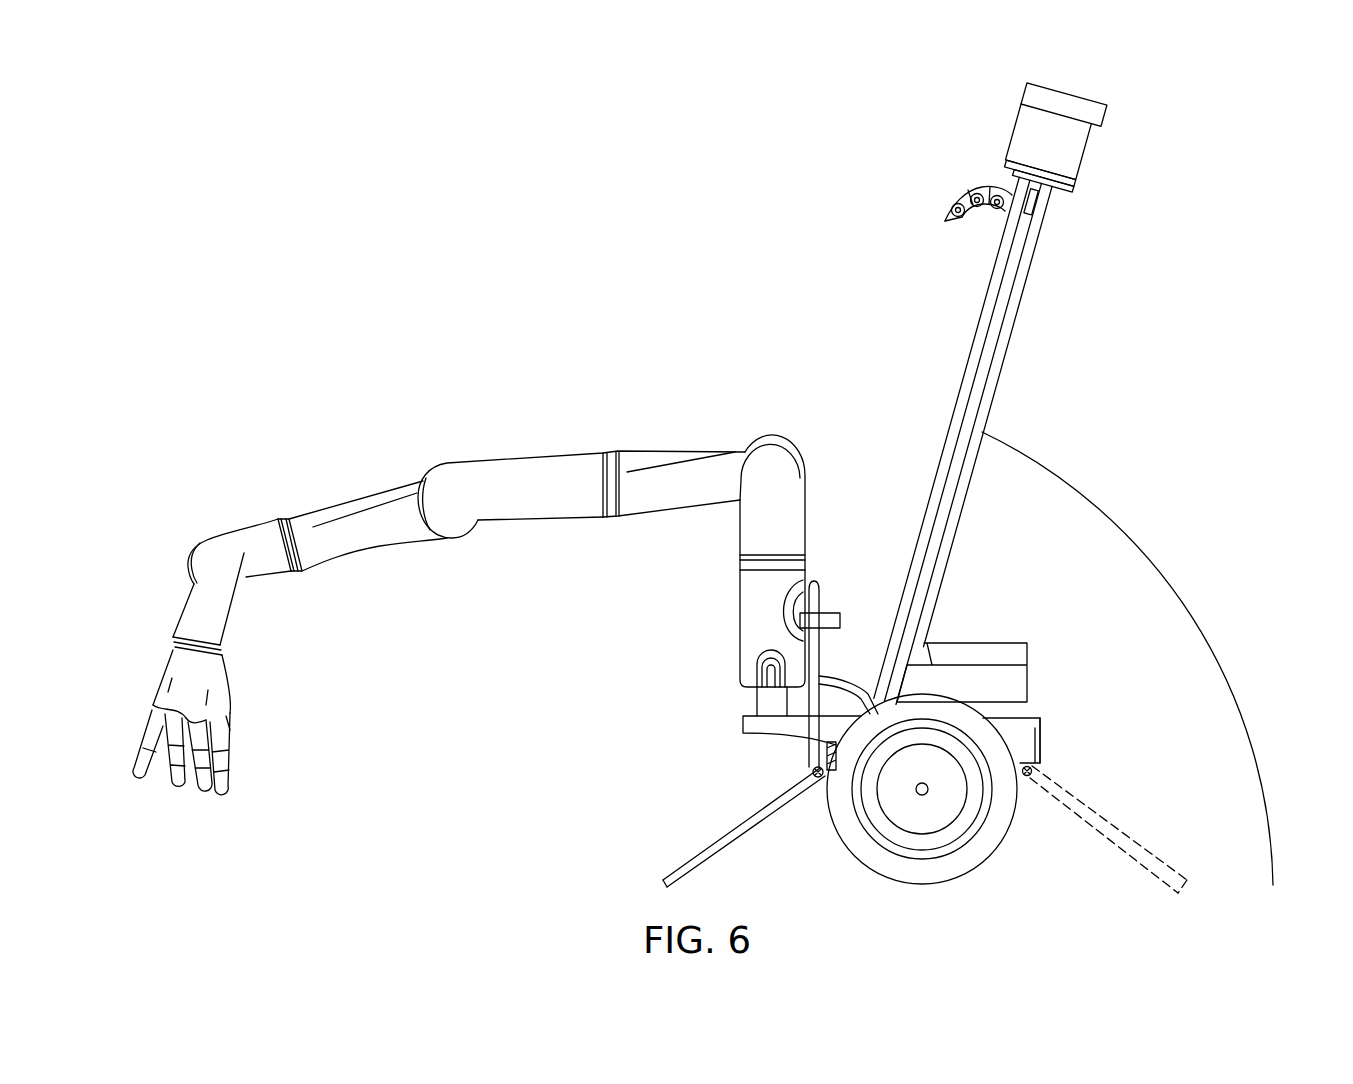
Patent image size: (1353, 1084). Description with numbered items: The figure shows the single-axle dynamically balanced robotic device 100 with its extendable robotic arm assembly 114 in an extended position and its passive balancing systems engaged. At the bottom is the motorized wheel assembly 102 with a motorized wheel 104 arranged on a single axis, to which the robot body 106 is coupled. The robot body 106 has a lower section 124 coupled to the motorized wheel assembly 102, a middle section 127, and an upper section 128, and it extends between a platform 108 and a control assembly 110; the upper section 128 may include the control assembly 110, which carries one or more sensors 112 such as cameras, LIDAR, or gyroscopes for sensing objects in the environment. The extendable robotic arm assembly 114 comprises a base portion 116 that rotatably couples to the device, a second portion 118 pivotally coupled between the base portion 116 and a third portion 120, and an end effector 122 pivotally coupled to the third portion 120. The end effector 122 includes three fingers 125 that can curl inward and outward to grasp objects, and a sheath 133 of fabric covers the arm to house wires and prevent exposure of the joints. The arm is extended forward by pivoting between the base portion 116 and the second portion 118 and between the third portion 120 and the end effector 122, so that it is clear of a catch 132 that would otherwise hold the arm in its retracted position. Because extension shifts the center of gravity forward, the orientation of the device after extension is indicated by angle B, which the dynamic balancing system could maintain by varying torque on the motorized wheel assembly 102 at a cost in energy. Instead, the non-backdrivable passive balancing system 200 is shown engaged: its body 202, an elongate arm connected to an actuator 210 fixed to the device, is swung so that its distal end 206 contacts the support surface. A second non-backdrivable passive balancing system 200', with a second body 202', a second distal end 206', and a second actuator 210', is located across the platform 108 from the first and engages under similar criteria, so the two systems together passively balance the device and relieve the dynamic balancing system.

The single-axle dynamically balanced robotic device 100 is at (1140, 470).
The motorized wheel assembly 102 is at (1030, 636).
The motorized wheel 104 is at (840, 828).
The robot body 106 is at (1005, 341).
The platform 108 is at (1040, 726).
The control assembly 110 is at (1080, 151).
The sensor 112 is at (996, 142).
The extendable robotic arm assembly 114 is at (432, 398).
The base portion 116 is at (798, 476).
The second portion 118 is at (664, 458).
The third portion 120 is at (255, 526).
The end effector 122 is at (220, 607).
The lower section 124 is at (750, 778).
The finger 125 is at (226, 788).
The middle section 127 is at (1163, 395).
The upper section 128 is at (1008, 96).
The catch 132 is at (955, 214).
The sheath 133 is at (549, 495).
The non-backdrivable passive balancing system 200 is at (704, 811).
The body 202 is at (741, 827).
The distal end 206 is at (625, 888).
The actuator 210 is at (787, 761).
The second non-backdrivable passive balancing system 200' is at (1121, 833).
The second body 202' is at (1108, 829).
The second distal end 206' is at (1162, 910).
The second actuator 210' is at (1070, 760).
The angle B is at (1196, 613).